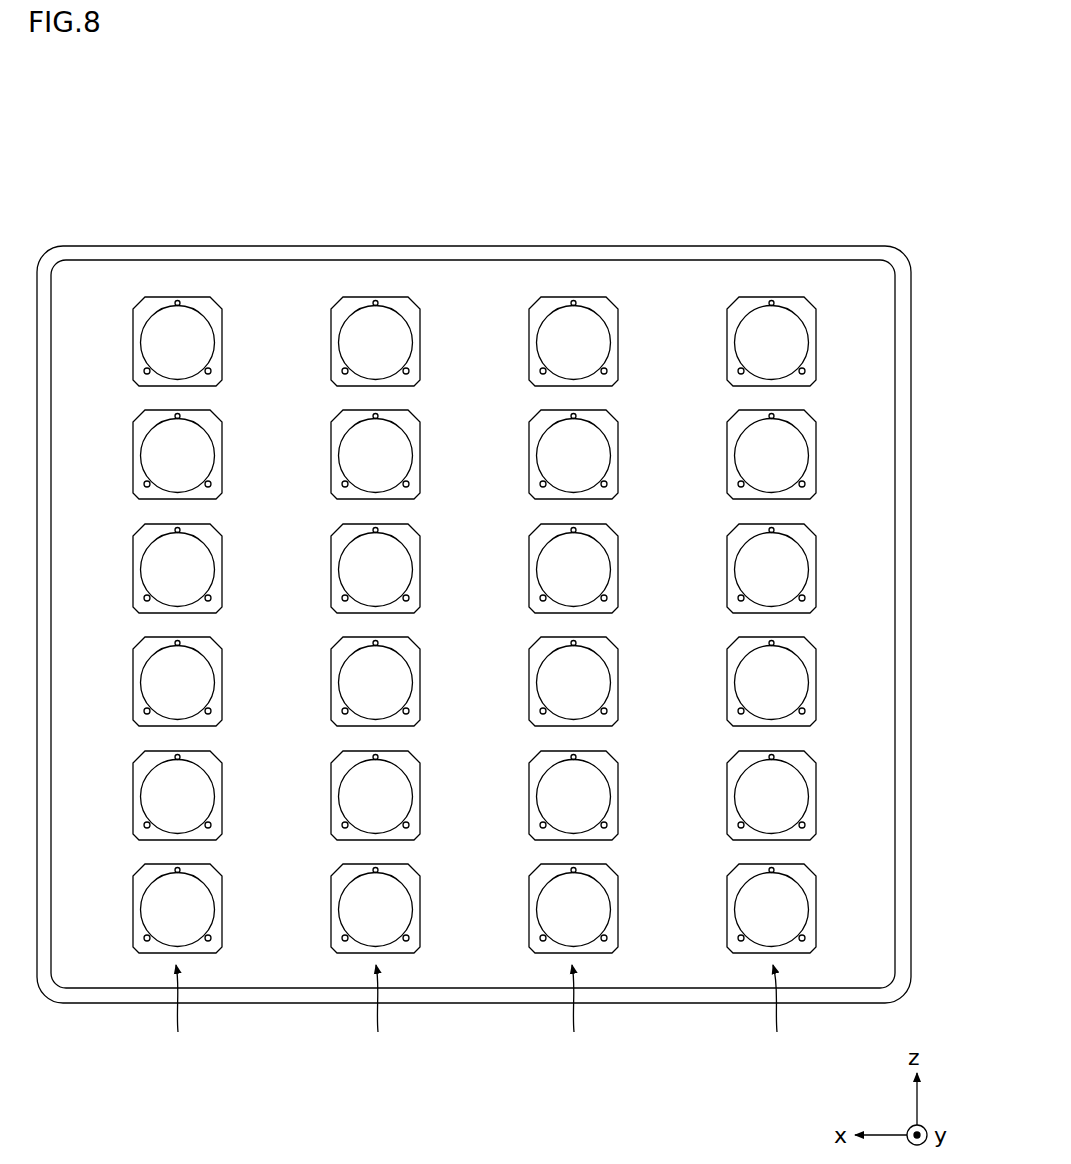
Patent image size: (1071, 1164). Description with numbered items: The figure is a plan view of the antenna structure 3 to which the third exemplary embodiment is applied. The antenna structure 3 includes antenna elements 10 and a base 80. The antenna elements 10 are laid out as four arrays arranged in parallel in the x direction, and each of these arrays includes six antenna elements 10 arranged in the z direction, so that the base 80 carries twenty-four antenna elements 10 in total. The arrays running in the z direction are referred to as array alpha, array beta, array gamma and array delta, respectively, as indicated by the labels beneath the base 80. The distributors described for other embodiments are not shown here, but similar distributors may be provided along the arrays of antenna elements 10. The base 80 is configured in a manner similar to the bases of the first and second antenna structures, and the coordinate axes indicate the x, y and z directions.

The antenna structure 3 is at (743, 152).
The antenna elements 10 is at (180, 297).
The base 80 is at (277, 258).